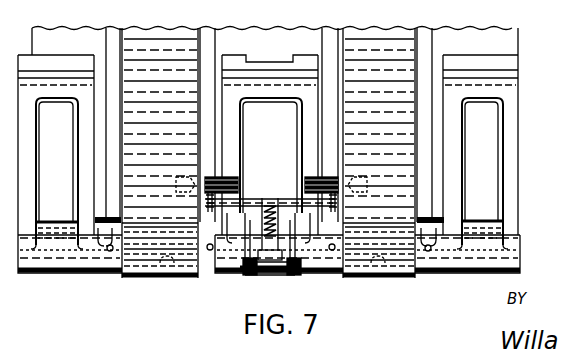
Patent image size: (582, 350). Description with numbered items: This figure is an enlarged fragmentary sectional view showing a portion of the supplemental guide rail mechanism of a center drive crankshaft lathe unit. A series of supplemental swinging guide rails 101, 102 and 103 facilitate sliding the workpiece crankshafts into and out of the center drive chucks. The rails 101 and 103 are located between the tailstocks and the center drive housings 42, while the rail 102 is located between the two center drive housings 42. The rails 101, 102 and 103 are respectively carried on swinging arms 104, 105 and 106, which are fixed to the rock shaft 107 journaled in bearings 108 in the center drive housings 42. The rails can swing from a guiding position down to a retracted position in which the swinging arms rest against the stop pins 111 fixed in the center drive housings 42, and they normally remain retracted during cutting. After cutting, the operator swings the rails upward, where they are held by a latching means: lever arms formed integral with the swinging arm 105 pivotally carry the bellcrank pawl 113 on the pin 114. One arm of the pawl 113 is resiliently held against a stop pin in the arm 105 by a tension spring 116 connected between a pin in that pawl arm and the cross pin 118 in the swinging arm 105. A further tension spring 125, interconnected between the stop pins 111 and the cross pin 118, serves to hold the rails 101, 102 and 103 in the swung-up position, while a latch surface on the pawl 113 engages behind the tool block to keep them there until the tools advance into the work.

The center drive housing 42 is at (174, 81).
The supplemental swinging guide rail 101 is at (50, 60).
The supplemental swinging guide rail 102 is at (257, 62).
The supplemental swinging guide rail 103 is at (470, 63).
The swinging arm 104 is at (78, 133).
The swinging arm 105 is at (298, 126).
The swinging arm 106 is at (506, 127).
The rock shaft 107 is at (527, 240).
The bearing 108 is at (172, 280).
The stop pin 111 is at (187, 173).
The bellcrank pawl 113 is at (248, 282).
The pin 114 is at (307, 278).
The tension spring 116 is at (280, 197).
The cross pin 118 is at (256, 198).
The tension spring 125 is at (195, 200).